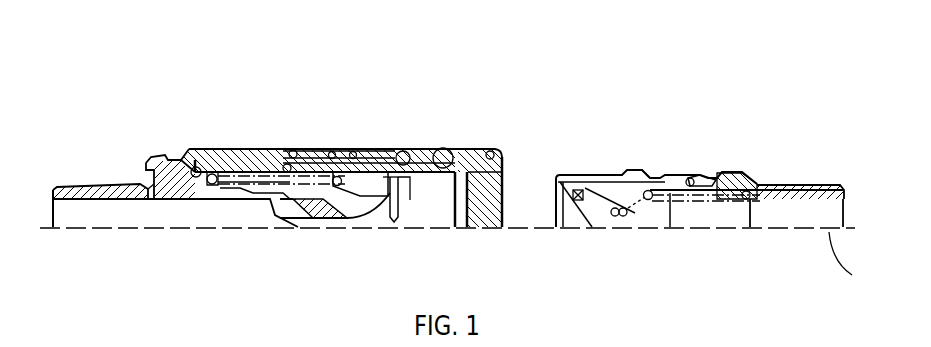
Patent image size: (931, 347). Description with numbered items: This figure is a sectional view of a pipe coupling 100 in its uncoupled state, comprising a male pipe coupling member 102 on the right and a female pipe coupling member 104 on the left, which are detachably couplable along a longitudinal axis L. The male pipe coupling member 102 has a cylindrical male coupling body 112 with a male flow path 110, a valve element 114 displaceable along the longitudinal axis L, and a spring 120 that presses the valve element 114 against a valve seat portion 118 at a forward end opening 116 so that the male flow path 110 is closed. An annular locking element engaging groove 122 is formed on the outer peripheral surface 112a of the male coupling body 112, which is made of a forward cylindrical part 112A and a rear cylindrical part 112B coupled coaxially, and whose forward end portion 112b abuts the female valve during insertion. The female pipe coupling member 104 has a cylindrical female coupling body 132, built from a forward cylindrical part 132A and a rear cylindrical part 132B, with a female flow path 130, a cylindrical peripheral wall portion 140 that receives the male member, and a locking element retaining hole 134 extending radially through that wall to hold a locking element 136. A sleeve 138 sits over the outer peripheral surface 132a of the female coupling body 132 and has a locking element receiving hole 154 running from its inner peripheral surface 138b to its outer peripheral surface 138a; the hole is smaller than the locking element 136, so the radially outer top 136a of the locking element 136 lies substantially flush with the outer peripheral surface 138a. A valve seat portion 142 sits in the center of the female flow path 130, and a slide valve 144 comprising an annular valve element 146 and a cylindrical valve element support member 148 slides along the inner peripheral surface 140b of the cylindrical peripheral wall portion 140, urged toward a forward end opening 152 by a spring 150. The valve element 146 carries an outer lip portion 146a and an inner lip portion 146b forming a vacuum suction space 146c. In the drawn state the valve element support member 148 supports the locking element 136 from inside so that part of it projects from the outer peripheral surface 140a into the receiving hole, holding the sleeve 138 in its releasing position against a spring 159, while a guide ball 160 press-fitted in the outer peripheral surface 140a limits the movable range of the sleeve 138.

The pipe coupling 100 is at (548, 102).
The male pipe coupling member 102 is at (833, 131).
The female pipe coupling member 104 is at (82, 156).
The male flow path 110 is at (703, 215).
The male coupling body 112 is at (640, 173).
The forward cylindrical part 112A is at (720, 174).
The rear cylindrical part 112B is at (798, 181).
The outer peripheral surface 112a is at (694, 175).
The forward end portion 112b is at (549, 173).
The valve element 114 is at (615, 218).
The forward end opening 116 is at (579, 203).
The valve seat portion 118 is at (590, 174).
The spring 120 is at (670, 229).
The locking element engaging groove 122 is at (665, 175).
The female flow path 130 is at (193, 229).
The female coupling body 132 is at (200, 157).
The forward cylindrical part 132A is at (148, 186).
The rear cylindrical part 132B is at (115, 190).
The outer peripheral surface 132a is at (258, 172).
The locking element retaining hole 134 is at (460, 200).
The locking element 136 is at (441, 148).
The radially outer top 136a is at (452, 152).
The sleeve 138 is at (292, 150).
The outer peripheral surface 138a is at (348, 158).
The inner peripheral surface 138b is at (305, 152).
The cylindrical peripheral wall portion 140 is at (489, 150).
The outer peripheral surface 140a is at (495, 154).
The inner peripheral surface 140b is at (504, 178).
The valve seat portion 142 is at (378, 205).
The slide valve 144 is at (433, 190).
The valve element 146 is at (313, 226).
The outer lip portion 146a is at (412, 195).
The inner lip portion 146b is at (388, 215).
The vacuum suction space 146c is at (396, 208).
The valve element support member 148 is at (470, 192).
The spring 150 is at (198, 168).
The forward end opening 152 is at (500, 205).
The locking element receiving hole 154 is at (403, 151).
The spring 159 is at (335, 151).
The guide ball 160 is at (340, 177).
The longitudinal axis L is at (847, 260).